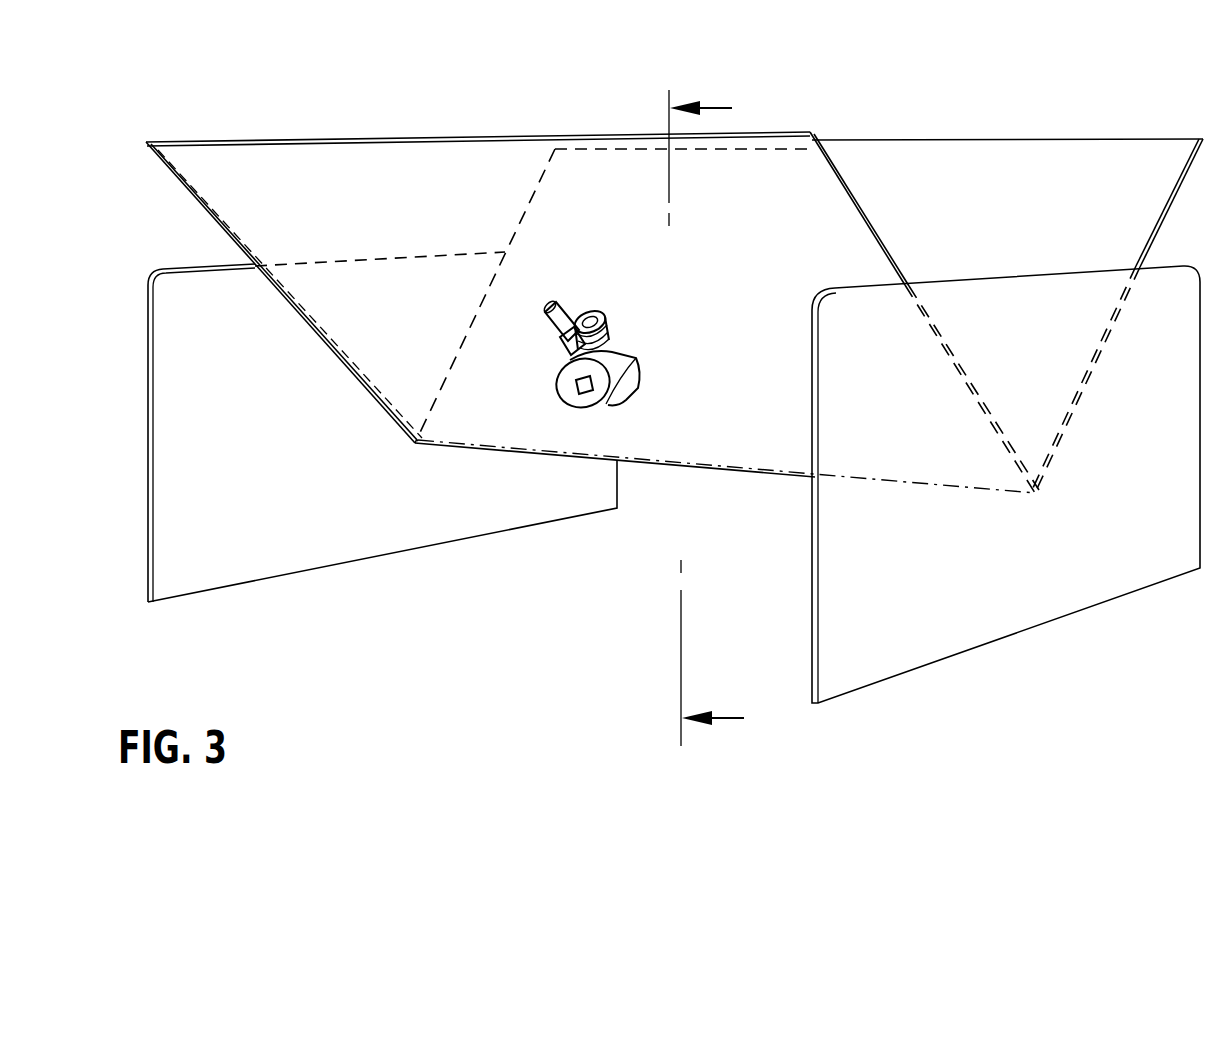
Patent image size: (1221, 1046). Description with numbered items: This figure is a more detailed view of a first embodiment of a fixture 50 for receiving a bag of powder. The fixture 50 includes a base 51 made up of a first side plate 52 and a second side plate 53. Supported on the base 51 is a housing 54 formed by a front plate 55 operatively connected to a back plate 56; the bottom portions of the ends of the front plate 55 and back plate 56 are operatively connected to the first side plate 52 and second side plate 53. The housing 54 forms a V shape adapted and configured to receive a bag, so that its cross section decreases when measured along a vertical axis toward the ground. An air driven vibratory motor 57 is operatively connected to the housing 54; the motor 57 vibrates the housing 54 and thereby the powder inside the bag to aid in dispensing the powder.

The fixture 50 is at (1000, 86).
The base 51 is at (1063, 607).
The first side plate 52 is at (822, 573).
The second side plate 53 is at (333, 553).
The housing 54 is at (415, 444).
The front plate 55 is at (1030, 222).
The back plate 56 is at (780, 238).
The air driven vibratory motor 57 is at (624, 353).